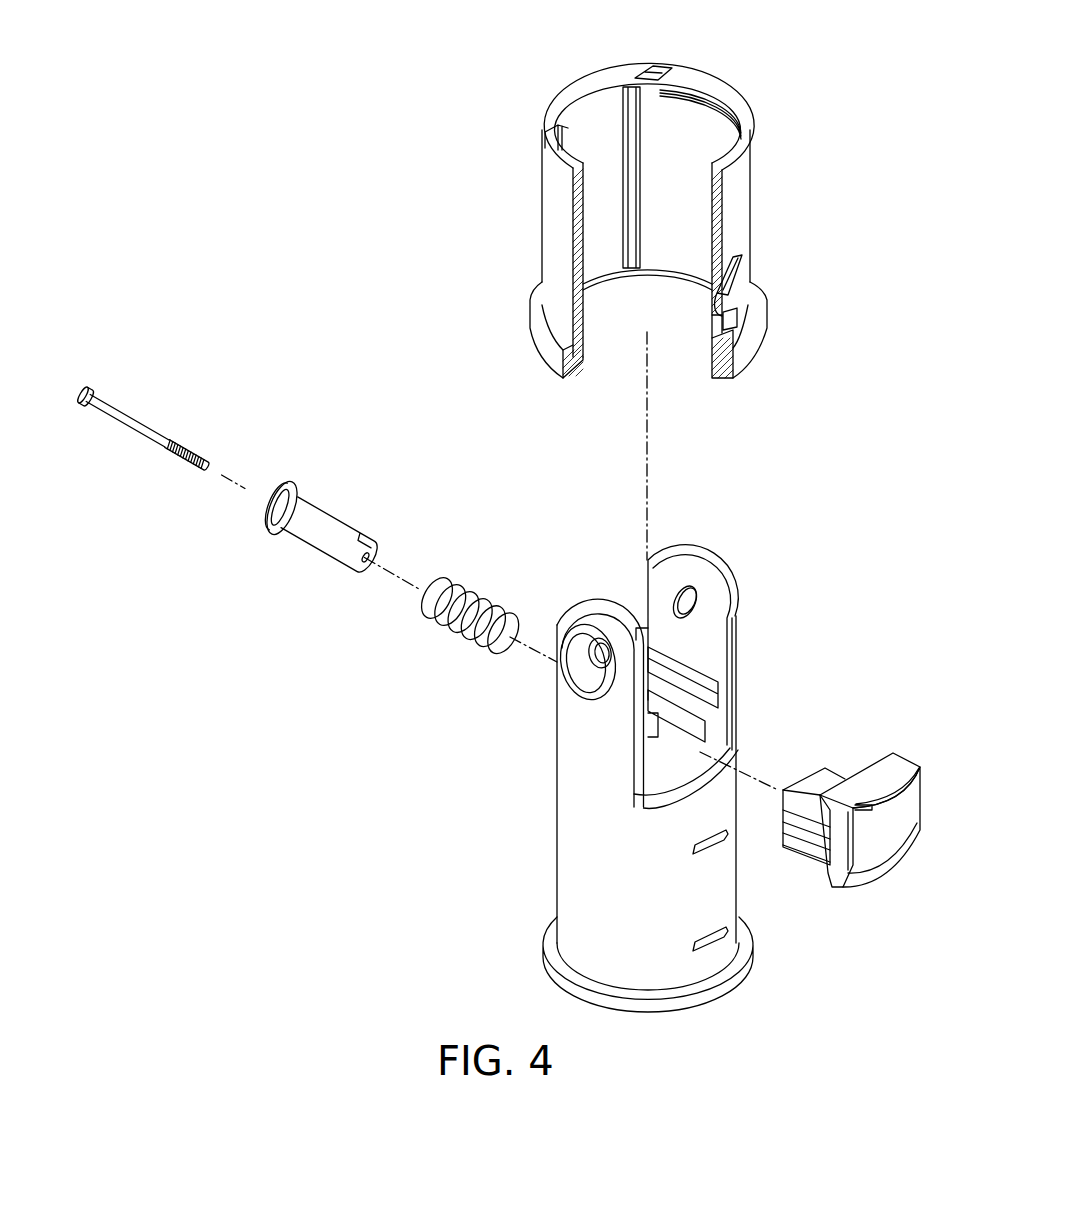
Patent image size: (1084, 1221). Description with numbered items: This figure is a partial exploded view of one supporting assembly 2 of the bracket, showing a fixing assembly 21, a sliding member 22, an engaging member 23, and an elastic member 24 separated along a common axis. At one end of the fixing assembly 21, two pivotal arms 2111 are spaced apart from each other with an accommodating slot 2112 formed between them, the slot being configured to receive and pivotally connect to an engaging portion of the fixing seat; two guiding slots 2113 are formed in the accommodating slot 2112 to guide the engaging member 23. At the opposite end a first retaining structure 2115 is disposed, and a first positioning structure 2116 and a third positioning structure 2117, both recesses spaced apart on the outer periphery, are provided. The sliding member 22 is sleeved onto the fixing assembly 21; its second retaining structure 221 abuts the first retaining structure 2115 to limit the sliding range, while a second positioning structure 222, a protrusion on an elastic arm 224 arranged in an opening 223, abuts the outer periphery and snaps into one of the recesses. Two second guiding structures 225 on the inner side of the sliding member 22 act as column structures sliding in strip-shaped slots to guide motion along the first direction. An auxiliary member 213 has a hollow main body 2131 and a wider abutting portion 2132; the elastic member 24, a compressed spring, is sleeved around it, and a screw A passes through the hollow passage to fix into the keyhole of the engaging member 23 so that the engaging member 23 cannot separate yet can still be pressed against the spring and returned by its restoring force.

The supporting assembly 2 is at (262, 133).
The fixing assembly 21 is at (573, 818).
The pivotal arm 2111 is at (594, 604).
The accommodating slot 2112 is at (630, 590).
The guiding slot 2113 is at (708, 712).
The first retaining structure 2115 is at (558, 978).
The first positioning structure 2116 is at (717, 847).
The third positioning structure 2117 is at (717, 940).
The auxiliary member 213 is at (308, 556).
The main body 2131 is at (332, 522).
The abutting portion 2132 is at (290, 486).
The sliding member 22 is at (762, 185).
The second retaining structure 221 is at (752, 363).
The second positioning structure 222 is at (705, 322).
The opening 223 is at (735, 270).
The elastic arm 224 is at (740, 335).
The second guiding structure 225 is at (632, 115).
The engaging member 23 is at (888, 745).
The elastic member 24 is at (445, 628).
The screw A is at (132, 432).